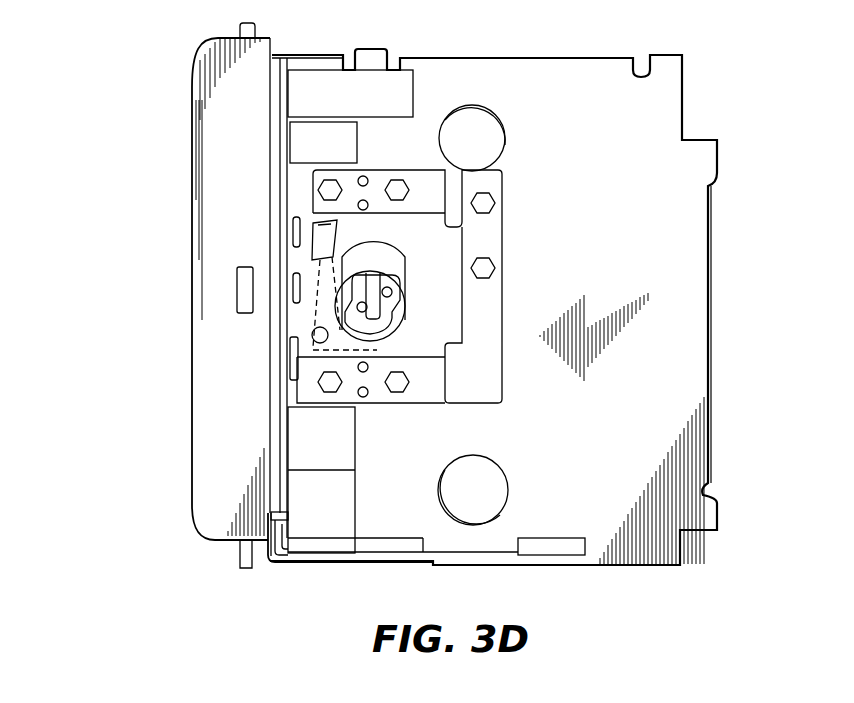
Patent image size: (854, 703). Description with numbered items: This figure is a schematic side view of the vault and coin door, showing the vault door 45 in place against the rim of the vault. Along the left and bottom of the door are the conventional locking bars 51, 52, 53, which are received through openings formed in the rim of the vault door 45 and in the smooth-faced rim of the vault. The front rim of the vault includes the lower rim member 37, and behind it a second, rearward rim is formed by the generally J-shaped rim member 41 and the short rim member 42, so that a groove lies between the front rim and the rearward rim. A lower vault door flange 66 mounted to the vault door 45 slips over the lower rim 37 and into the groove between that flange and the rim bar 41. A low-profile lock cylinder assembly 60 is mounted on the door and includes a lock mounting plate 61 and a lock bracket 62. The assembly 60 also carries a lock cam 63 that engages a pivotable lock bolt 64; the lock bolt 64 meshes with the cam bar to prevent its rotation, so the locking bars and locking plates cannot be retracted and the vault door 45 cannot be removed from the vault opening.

The vault door 45 is at (146, 160).
The locking bar 51 is at (251, 22).
The locking bar 53 is at (240, 557).
The locking bar 52 is at (249, 267).
The short rim member 42 is at (340, 143).
The J-shaped rim member 41 is at (337, 497).
The rim member 37 is at (275, 560).
The lower vault door flange 66 is at (284, 543).
The lock cylinder assembly 60 is at (415, 286).
The lock mounting plate 61 is at (313, 180).
The lock bracket 62 is at (438, 250).
The lock cam 63 is at (352, 335).
The lock bolt 64 is at (312, 305).